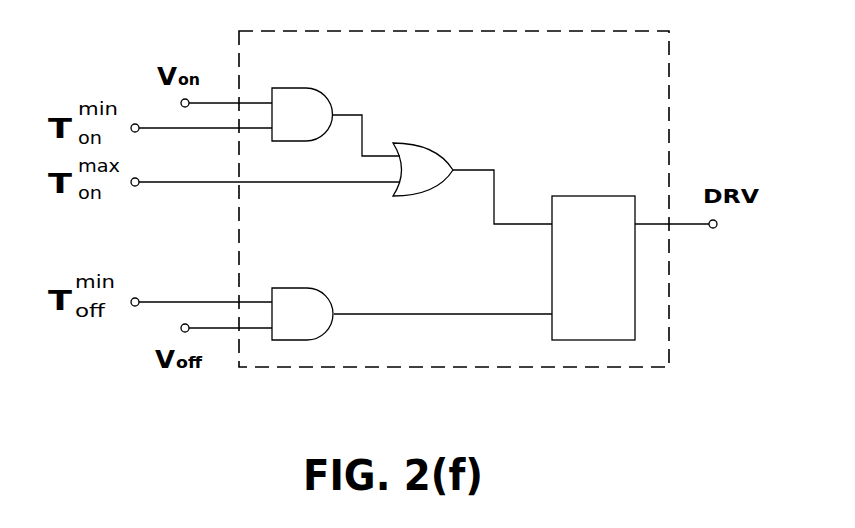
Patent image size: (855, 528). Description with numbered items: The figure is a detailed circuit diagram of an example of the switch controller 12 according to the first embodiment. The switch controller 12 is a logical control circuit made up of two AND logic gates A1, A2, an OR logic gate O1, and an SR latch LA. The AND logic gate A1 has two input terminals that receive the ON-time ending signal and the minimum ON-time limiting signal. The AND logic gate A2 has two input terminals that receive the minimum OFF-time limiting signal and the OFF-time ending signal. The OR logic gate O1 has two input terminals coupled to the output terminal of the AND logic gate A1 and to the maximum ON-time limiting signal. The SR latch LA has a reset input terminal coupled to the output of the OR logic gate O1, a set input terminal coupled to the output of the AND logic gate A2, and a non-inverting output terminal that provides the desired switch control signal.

The switch controller 12 is at (669, 80).
The AND logic gate A1 is at (293, 88).
The AND logic gate A2 is at (294, 288).
The OR logic gate O1 is at (412, 197).
The SR latch LA is at (593, 196).